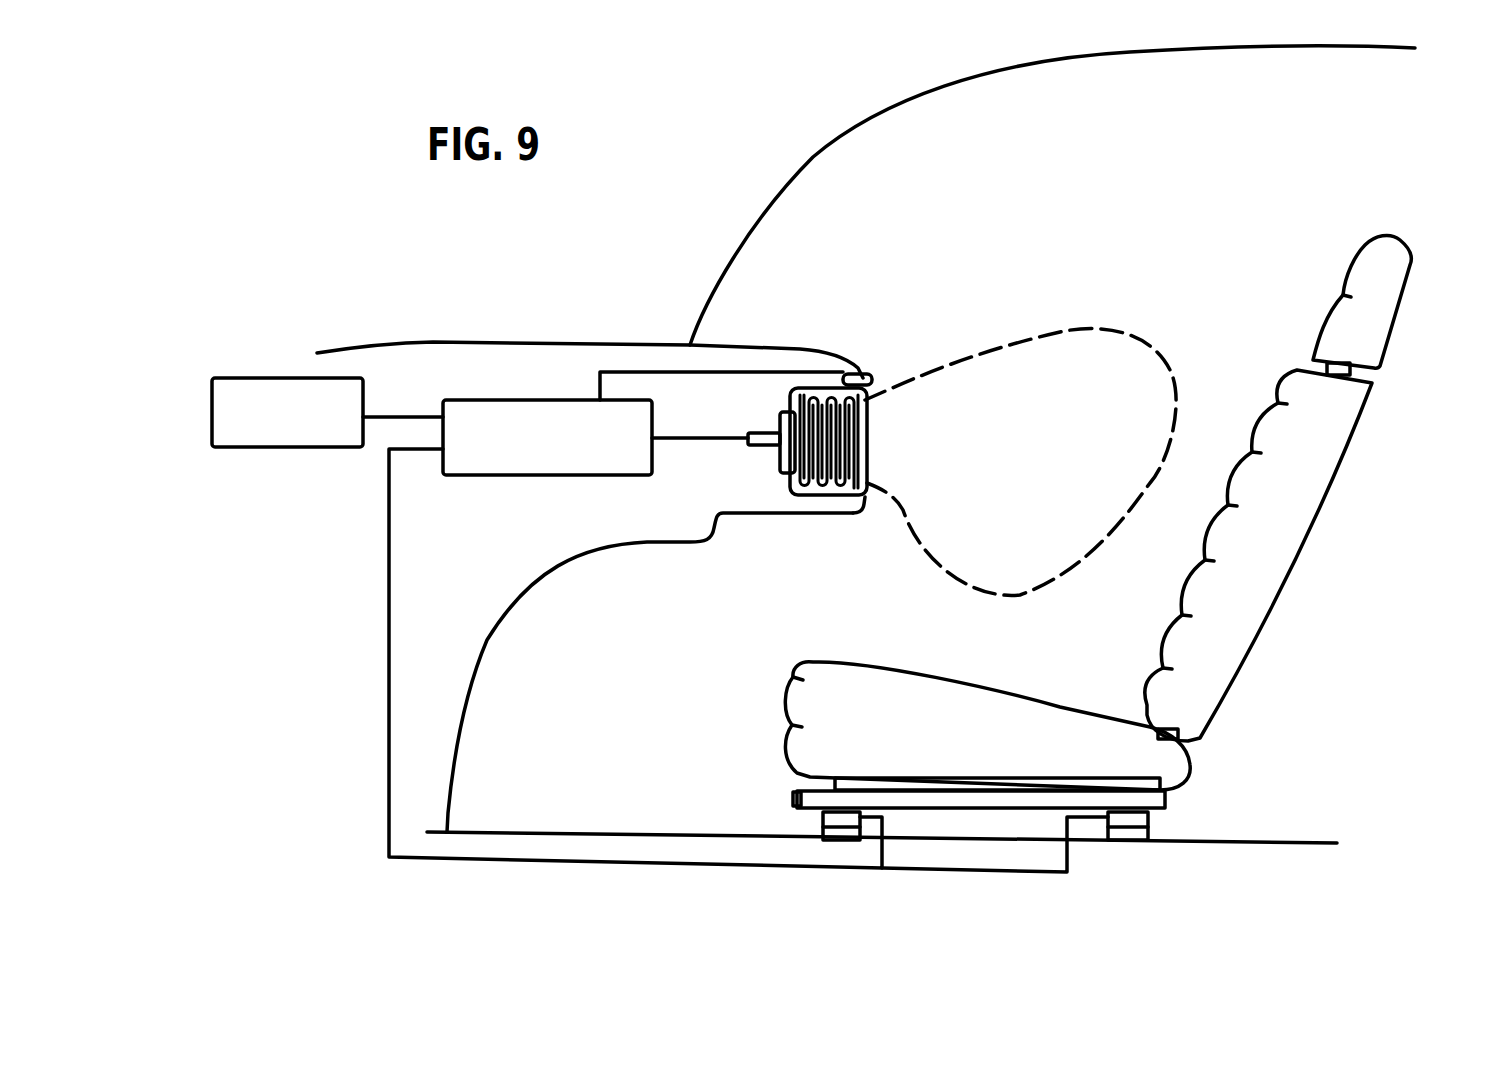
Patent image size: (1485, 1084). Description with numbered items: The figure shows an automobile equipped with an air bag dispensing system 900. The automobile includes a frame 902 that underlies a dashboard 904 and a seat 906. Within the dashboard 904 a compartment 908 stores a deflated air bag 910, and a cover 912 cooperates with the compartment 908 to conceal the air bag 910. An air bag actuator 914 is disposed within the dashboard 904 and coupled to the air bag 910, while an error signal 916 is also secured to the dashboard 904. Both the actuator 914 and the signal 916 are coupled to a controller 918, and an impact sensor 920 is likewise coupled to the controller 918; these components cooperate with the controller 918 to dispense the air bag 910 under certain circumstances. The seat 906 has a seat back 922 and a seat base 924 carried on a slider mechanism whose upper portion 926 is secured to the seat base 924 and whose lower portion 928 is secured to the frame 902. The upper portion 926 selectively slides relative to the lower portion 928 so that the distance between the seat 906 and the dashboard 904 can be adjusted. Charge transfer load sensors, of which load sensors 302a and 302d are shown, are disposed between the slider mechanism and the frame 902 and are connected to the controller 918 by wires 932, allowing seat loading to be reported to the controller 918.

The air bag dispensing system 900 is at (636, 288).
The frame 902 is at (1260, 840).
The dashboard 904 is at (760, 350).
The seat 906 is at (1366, 538).
The compartment 908 is at (790, 489).
The air bag 910 is at (833, 497).
The cover 912 is at (867, 440).
The air bag actuator 914 is at (777, 430).
The error signal 916 is at (866, 377).
The controller 918 is at (543, 476).
The impact sensor 920 is at (272, 448).
The seat back 922 is at (1243, 656).
The seat base 924 is at (794, 675).
The upper portion of slider mechanism 926 is at (835, 781).
The lower portion of slider mechanism 928 is at (978, 803).
The wires 932 is at (389, 673).
The load sensor 302a is at (823, 814).
The load sensor 302d is at (1150, 823).